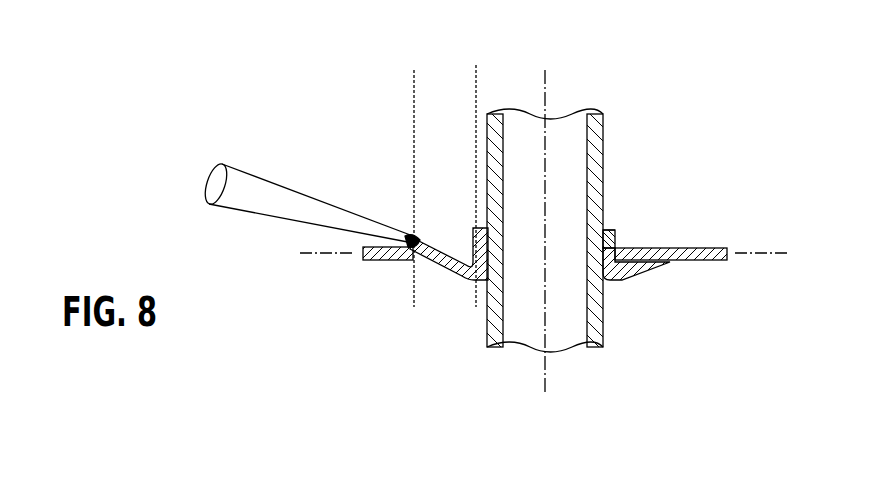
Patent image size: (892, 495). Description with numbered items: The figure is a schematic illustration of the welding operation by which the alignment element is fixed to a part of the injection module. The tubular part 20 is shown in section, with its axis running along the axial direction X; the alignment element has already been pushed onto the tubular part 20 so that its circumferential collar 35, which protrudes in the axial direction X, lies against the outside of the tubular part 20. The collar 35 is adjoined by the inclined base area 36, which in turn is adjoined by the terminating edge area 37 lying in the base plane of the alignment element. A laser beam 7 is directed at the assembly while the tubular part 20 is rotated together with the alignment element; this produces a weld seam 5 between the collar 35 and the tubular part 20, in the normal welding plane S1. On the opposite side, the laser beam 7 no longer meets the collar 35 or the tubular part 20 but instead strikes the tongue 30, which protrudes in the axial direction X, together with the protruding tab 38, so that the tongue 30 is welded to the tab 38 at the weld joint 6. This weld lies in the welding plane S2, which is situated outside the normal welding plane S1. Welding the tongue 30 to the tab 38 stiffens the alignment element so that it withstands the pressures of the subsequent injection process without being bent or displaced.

The tubular part 20 is at (602, 140).
The laser beam 7 is at (282, 205).
The weld joint 6 is at (410, 236).
The tongue 30 is at (402, 262).
The protruding tab 38 is at (442, 266).
The weld seam 5 is at (612, 245).
The collar 35 is at (608, 228).
The base area 36 is at (640, 278).
The edge area 37 is at (712, 246).
The normal welding plane S1 is at (476, 95).
The welding plane S2 is at (414, 95).
The axial direction X is at (545, 235).